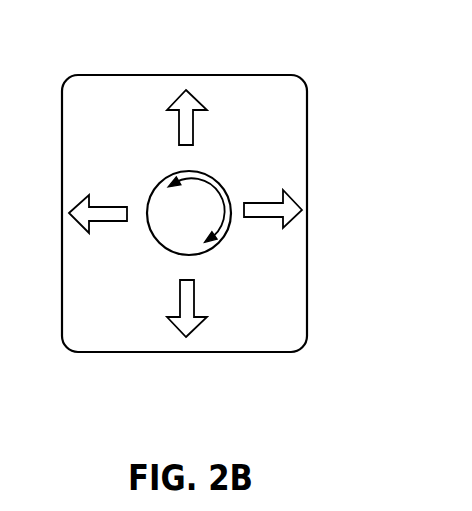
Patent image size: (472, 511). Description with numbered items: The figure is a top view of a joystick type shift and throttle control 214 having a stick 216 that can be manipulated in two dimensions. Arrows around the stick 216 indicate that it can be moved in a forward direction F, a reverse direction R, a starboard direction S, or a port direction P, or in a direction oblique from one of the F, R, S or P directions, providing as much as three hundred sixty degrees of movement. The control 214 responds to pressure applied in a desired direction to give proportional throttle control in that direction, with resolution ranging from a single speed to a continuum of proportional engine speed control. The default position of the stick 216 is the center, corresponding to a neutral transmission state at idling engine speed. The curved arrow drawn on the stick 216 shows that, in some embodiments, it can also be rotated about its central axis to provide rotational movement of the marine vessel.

The joystick type shift and throttle control 214 is at (230, 214).
The stick 216 is at (220, 180).
The forward direction F is at (187, 86).
The reverse direction R is at (187, 340).
The port direction P is at (74, 214).
The starboard direction S is at (296, 209).